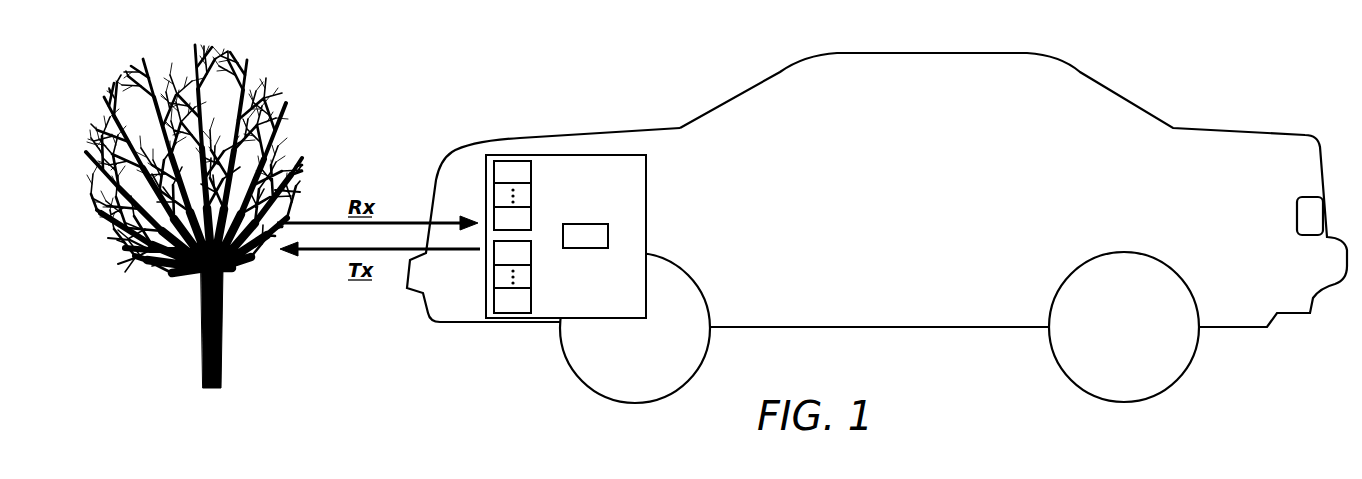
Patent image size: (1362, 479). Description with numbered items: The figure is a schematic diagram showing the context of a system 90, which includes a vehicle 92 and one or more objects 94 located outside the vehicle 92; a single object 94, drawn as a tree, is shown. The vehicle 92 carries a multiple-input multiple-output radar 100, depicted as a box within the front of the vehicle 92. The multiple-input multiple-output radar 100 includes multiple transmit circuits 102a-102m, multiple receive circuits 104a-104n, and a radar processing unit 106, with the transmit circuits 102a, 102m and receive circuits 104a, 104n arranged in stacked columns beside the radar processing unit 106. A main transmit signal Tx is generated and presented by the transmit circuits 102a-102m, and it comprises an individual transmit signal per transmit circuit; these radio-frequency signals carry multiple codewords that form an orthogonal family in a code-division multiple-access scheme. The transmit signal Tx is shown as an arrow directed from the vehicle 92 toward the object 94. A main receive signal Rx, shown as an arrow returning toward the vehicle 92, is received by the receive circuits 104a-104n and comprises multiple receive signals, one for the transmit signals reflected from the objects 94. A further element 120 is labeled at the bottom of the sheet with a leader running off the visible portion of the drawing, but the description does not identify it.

The system 90 is at (877, 203).
The vehicle 92 is at (630, 128).
The object 94 is at (267, 113).
The multiple-input multiple-output radar 100 is at (594, 198).
The transmit circuit 102a is at (531, 170).
The transmit circuit 102m is at (531, 222).
The receive circuit 104a is at (531, 252).
The receive circuit 104n is at (531, 305).
The radar processing unit 106 is at (608, 236).
The vehicle control module 120 is at (690, 478).